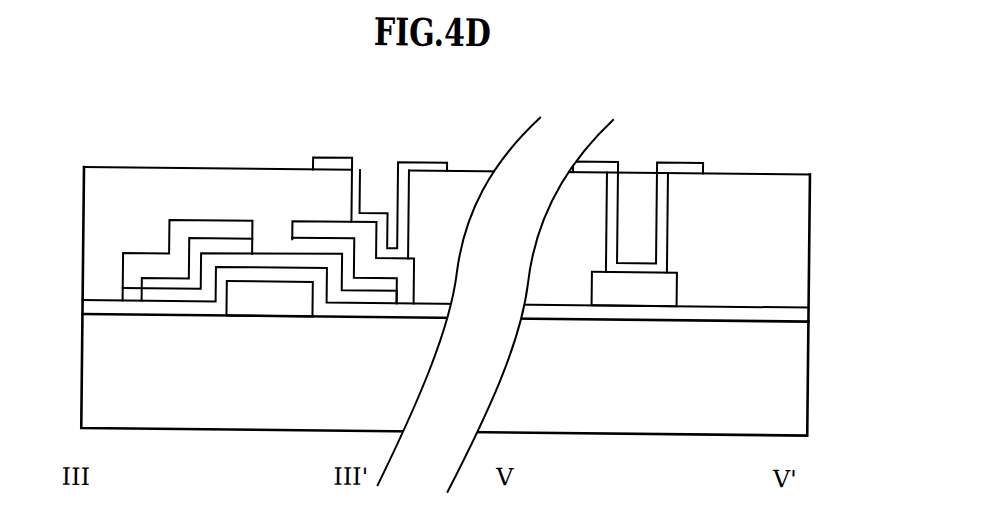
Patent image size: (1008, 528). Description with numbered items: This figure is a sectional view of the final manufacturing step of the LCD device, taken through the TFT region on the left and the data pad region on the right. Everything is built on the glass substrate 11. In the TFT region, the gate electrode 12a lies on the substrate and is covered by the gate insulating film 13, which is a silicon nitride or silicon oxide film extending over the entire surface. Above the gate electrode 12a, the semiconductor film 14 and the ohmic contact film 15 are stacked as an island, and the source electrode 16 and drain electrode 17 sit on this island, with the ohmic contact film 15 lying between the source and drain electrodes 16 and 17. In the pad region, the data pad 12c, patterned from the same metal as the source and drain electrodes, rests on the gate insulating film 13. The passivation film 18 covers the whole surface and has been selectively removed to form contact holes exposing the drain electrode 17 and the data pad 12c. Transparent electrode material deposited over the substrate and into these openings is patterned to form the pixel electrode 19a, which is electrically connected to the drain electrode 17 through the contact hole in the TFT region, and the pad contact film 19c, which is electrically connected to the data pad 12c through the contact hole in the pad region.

The glass substrate 11 is at (84, 370).
The gate electrode 12a is at (272, 302).
The data pad 12c is at (640, 291).
The gate insulating film 13 is at (84, 305).
The semiconductor film 14 is at (152, 295).
The ohmic contact film 15 is at (147, 280).
The source electrode 16 is at (211, 227).
The drain electrode 17 is at (295, 230).
The passivation film 18 is at (84, 210).
The pixel electrode 19a is at (420, 159).
The pad contact film 19c is at (683, 156).